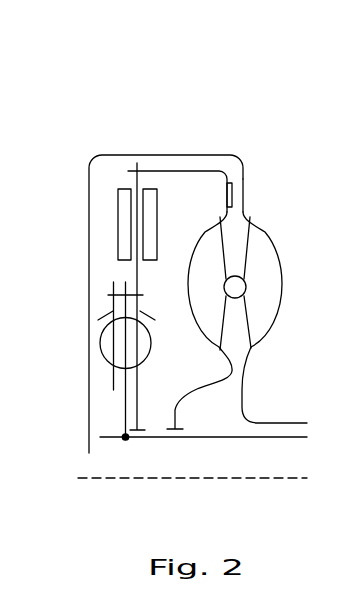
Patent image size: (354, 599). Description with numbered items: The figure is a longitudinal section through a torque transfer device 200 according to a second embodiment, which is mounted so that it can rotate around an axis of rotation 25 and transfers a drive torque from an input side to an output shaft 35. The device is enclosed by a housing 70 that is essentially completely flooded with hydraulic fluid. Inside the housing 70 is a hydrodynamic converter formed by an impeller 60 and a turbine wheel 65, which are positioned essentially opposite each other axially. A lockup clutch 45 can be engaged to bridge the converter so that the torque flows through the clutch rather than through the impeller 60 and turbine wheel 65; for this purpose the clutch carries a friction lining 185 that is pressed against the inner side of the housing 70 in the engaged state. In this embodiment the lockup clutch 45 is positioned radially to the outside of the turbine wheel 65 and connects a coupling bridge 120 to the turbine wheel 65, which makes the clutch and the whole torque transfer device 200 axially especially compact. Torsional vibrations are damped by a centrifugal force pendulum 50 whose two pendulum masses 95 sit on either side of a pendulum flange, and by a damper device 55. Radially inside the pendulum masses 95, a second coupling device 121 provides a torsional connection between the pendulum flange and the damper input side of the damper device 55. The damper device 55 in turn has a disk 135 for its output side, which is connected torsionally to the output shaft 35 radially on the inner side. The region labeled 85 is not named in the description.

The torque transfer device 200 is at (260, 78).
The housing 70 is at (242, 160).
The coupling bridge 120 is at (192, 171).
The friction lining 185 is at (234, 193).
The lockup clutch 45 is at (241, 188).
The electrode assembly 85 is at (141, 121).
The centrifugal force pendulum 50 is at (130, 153).
The pendulum masses 95 is at (122, 202).
The second coupling device 121 is at (102, 298).
The damper device 55 is at (96, 365).
The disk 135 is at (125, 437).
The impeller 60 is at (269, 287).
The turbine wheel 65 is at (204, 257).
The output shaft 35 is at (229, 438).
The axis of rotation 25 is at (262, 480).